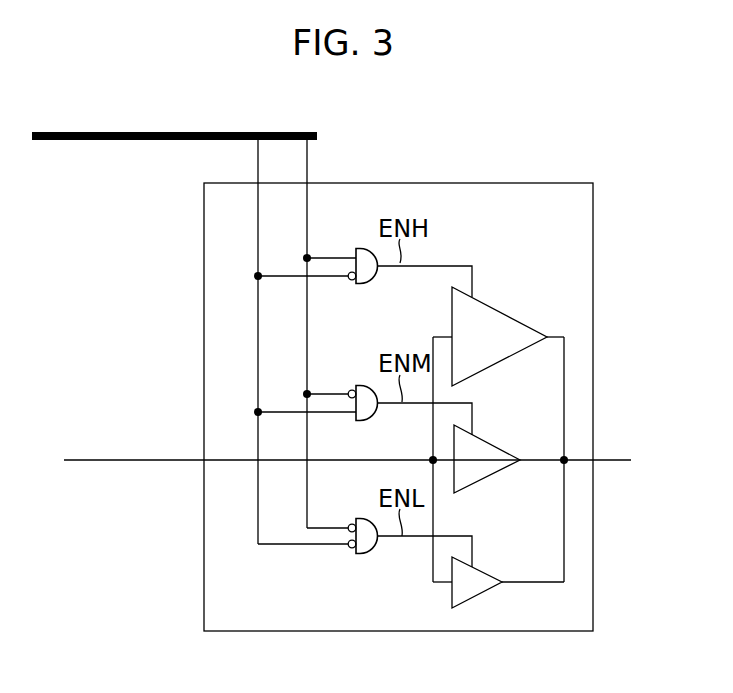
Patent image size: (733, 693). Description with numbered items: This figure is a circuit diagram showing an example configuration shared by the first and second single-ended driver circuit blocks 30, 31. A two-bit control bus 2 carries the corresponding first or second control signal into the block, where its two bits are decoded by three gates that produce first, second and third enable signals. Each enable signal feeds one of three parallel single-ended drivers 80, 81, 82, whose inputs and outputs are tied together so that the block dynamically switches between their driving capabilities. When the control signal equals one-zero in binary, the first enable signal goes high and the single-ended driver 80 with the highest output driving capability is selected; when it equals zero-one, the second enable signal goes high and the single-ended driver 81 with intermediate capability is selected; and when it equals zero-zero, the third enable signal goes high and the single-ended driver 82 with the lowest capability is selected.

The drive strength setting bus DrvStr* 2 is at (70, 152).
The first single-ended driver circuit block 30 is at (454, 407).
The second single-ended driver circuit block 31 is at (593, 241).
The single-ended driver 80 is at (503, 312).
The single-ended driver 81 is at (495, 442).
The single-ended driver 82 is at (487, 572).